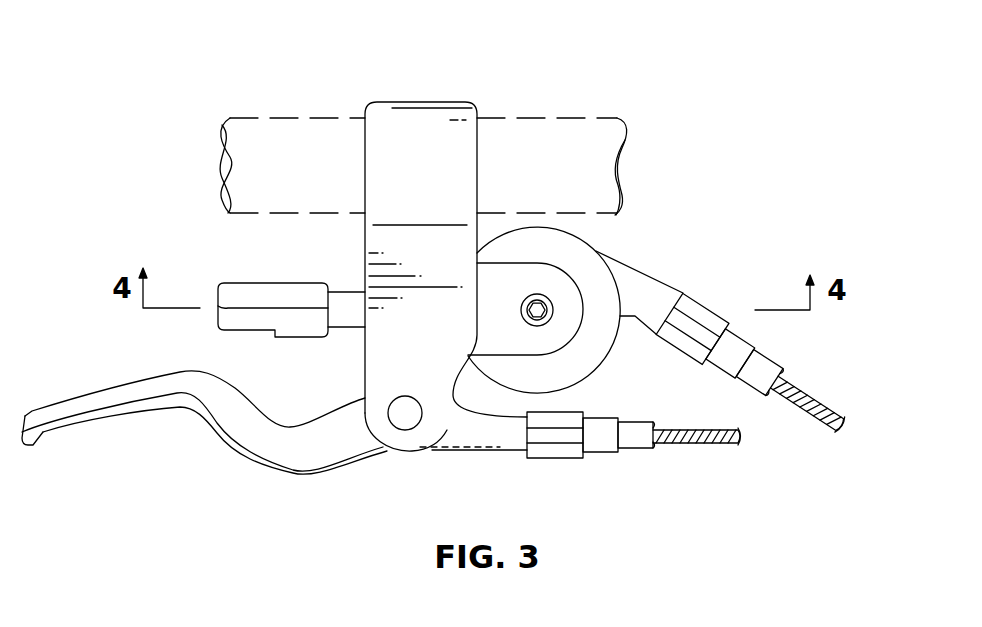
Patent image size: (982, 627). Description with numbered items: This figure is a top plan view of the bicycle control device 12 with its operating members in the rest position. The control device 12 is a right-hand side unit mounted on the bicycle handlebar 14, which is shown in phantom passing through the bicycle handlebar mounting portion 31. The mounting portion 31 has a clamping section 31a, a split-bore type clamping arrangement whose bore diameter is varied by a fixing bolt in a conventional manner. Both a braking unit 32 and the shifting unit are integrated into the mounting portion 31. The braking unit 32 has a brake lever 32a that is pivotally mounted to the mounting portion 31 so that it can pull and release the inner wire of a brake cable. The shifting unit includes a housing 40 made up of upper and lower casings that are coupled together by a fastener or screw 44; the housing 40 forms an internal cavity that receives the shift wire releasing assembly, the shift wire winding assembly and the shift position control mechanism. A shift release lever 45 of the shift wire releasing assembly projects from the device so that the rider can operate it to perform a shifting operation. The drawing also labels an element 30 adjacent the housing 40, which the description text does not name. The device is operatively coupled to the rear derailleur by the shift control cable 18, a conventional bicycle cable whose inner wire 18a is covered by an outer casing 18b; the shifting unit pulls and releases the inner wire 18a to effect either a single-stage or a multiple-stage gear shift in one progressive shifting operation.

The bicycle control device 12 is at (713, 185).
The bicycle handlebar 14 is at (572, 118).
The shift control cable 18 is at (822, 320).
The inner wire 18a is at (788, 386).
The outer casing 18b is at (768, 360).
The pulley / cable guide 30 is at (616, 237).
The bicycle handlebar mounting portion 31 is at (397, 91).
The clamping section 31a is at (365, 193).
The braking unit 32 is at (389, 462).
The brake lever 32a is at (220, 428).
The housing 40 is at (630, 285).
The screw 44 is at (537, 320).
The shift release lever 45 is at (264, 278).